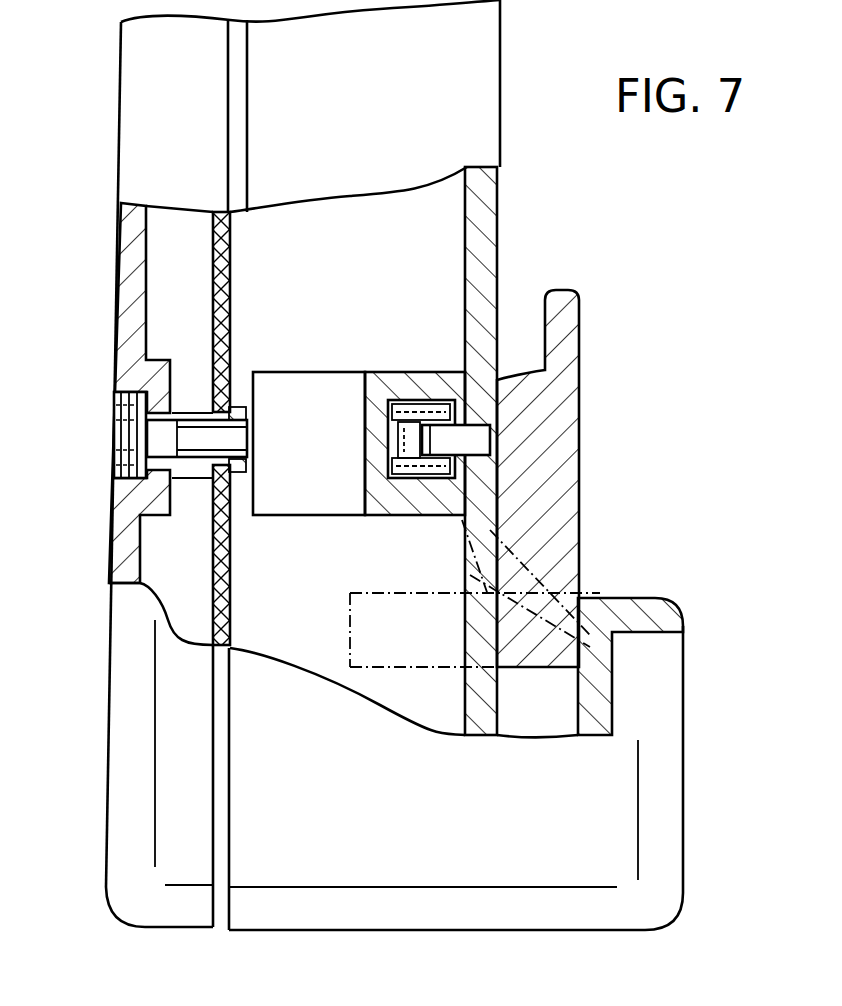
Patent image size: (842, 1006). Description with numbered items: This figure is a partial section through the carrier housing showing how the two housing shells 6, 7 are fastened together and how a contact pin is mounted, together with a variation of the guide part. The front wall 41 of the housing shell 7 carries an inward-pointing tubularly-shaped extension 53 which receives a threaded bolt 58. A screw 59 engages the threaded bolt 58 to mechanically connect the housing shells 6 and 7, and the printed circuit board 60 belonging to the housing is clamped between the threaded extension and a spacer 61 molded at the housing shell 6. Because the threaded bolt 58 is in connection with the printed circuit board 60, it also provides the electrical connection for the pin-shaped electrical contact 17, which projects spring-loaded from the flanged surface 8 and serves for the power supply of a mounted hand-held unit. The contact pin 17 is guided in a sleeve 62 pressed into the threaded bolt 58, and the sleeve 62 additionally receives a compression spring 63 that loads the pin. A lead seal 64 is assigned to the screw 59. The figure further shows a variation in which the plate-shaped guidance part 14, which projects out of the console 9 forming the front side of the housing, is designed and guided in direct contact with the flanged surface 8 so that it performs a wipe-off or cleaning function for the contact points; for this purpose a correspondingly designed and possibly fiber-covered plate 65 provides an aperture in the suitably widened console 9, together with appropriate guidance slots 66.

The housing shell 6 is at (178, 117).
The housing shell 7 is at (395, 118).
The flanged surface 8 is at (500, 140).
The console 9 is at (625, 813).
The guidance part 14 is at (618, 475).
The electrical contact 17 is at (470, 440).
The front wall 41 is at (485, 244).
The tubularly-shaped extension 53 is at (318, 487).
The threaded bolt 58 is at (235, 397).
The screw 59 is at (189, 447).
The printed circuit board 60 is at (231, 255).
The spacer 61 is at (228, 527).
The sleeve 62 is at (458, 370).
The compression spring 63 is at (405, 513).
The lead seal 64 is at (113, 470).
The plate 65 is at (550, 518).
The guidance slot 66 is at (575, 708).